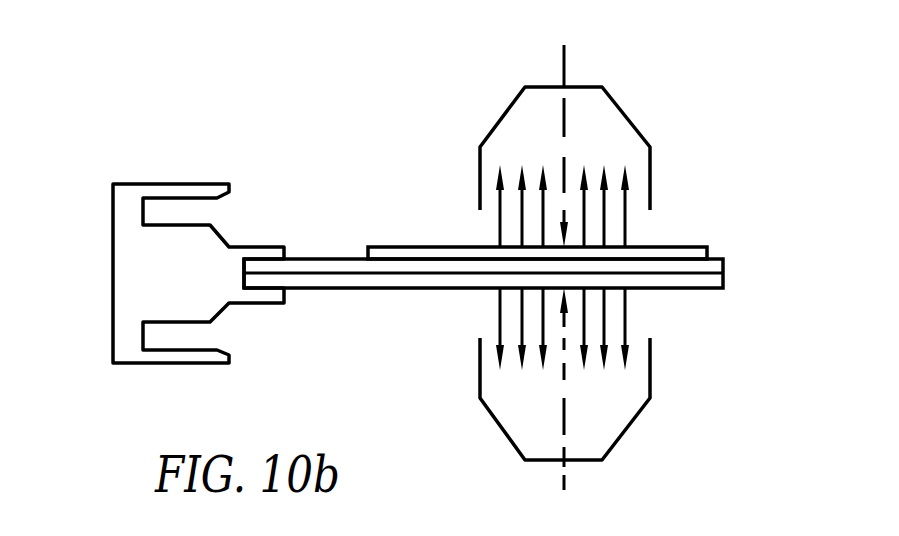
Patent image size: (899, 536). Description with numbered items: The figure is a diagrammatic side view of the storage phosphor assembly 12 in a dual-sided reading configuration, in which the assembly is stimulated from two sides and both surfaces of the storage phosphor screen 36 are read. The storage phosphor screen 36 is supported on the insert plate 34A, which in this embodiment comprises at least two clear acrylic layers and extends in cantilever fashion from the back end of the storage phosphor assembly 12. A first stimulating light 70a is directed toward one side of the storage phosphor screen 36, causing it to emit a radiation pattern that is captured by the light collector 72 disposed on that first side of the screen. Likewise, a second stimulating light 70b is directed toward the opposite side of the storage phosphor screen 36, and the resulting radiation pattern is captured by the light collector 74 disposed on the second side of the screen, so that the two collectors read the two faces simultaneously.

The storage phosphor assembly 12 is at (104, 264).
The insert plate 34A is at (731, 287).
The storage phosphor screen 36 is at (687, 247).
The first stimulating light 70a is at (563, 63).
The second stimulating light 70b is at (562, 477).
The light collector 72 is at (490, 135).
The light collector 74 is at (483, 405).